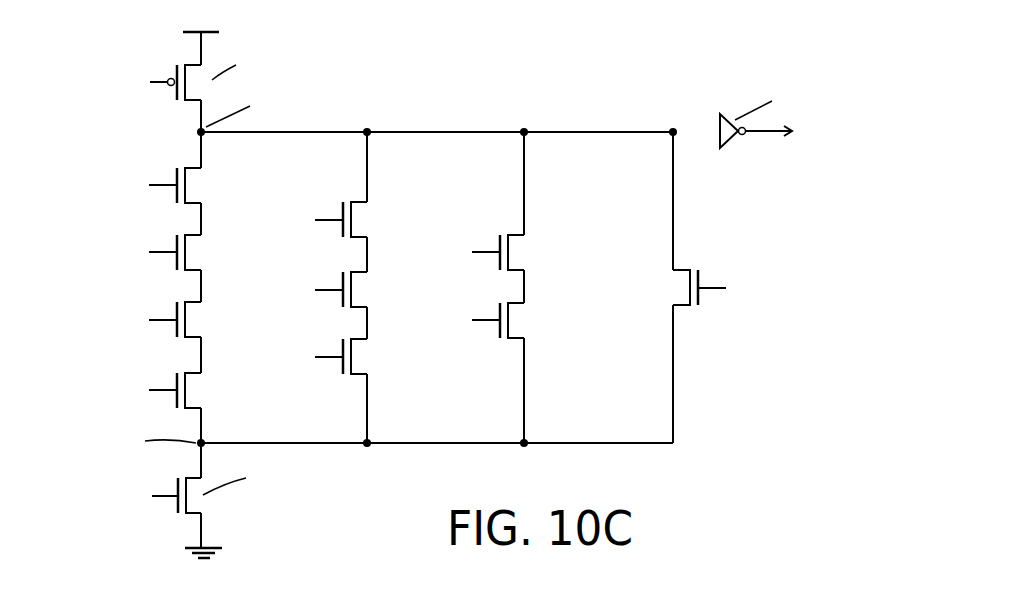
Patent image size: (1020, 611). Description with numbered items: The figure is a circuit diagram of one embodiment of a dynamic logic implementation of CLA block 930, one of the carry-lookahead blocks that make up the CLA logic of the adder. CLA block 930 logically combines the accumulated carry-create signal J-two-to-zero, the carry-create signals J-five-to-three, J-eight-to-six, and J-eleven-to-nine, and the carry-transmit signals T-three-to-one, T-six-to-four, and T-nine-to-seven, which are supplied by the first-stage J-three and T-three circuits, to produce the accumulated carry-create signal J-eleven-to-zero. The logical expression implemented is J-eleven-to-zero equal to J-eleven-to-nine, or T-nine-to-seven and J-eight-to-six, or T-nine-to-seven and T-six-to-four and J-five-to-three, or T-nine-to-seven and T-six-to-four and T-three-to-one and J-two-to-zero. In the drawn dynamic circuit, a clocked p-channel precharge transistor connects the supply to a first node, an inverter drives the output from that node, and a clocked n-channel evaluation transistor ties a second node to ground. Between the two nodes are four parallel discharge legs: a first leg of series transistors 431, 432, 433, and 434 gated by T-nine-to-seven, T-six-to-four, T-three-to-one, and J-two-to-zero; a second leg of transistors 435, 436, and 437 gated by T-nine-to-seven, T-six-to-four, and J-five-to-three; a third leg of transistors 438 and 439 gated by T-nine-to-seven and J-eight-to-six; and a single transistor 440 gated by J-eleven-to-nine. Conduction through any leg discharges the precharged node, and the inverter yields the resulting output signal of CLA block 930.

The transistor T9-7 (first leg) 431 is at (223, 173).
The transistor T6-4 (first leg) 432 is at (223, 241).
The transistor T3-1 (first leg) 433 is at (223, 308).
The transistor J2-0 (first leg) 434 is at (205, 387).
The transistor T9-7 (second leg) 435 is at (360, 225).
The transistor T6-4 (second leg) 436 is at (360, 293).
The transistor J5-3 (second leg) 437 is at (360, 356).
The transistor T9-7 (third leg) 438 is at (520, 253).
The transistor J8-6 (third leg) 439 is at (520, 321).
The transistor J11-9 (fourth leg) 440 is at (677, 288).
The CLA block 930 is at (741, 483).